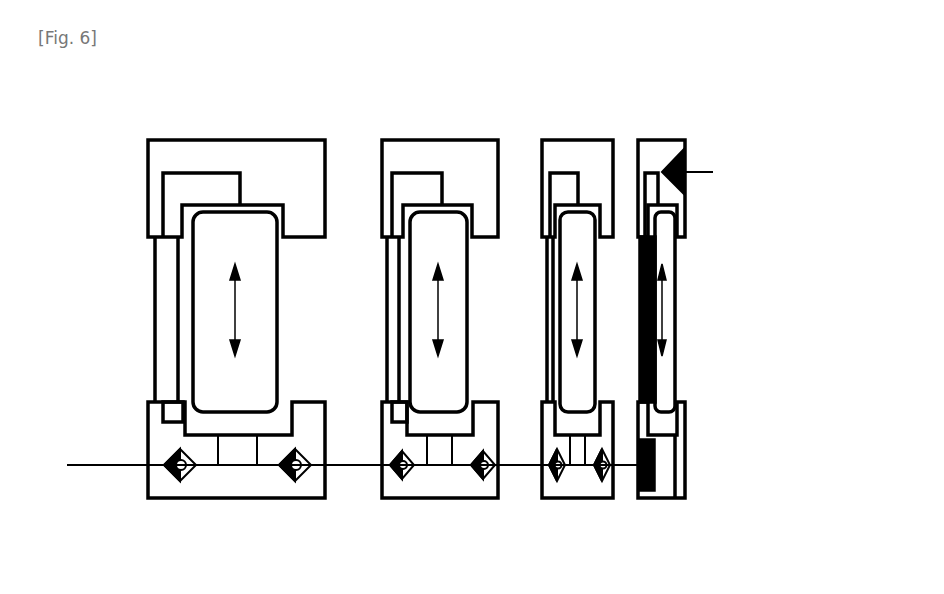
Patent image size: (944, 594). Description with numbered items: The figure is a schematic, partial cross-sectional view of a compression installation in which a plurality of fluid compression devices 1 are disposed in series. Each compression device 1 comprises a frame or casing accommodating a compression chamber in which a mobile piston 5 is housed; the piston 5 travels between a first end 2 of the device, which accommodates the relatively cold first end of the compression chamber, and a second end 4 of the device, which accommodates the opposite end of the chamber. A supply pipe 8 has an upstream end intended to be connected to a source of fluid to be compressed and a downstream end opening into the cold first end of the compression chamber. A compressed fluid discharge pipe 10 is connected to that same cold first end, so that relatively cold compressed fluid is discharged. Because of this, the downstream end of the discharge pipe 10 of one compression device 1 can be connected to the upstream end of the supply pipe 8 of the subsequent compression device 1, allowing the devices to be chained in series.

The fluid compression device 1 is at (262, 499).
The first end 2 is at (200, 481).
The second end 4 is at (283, 152).
The mobile piston 5 is at (205, 280).
The supply pipe 8 is at (107, 466).
The compressed fluid discharge pipe 10 is at (699, 171).